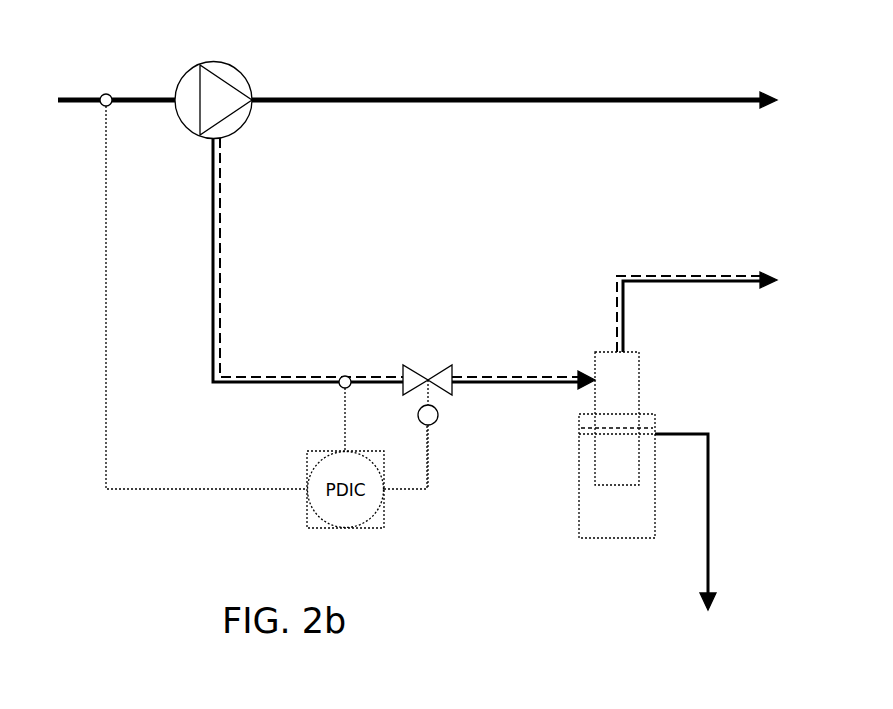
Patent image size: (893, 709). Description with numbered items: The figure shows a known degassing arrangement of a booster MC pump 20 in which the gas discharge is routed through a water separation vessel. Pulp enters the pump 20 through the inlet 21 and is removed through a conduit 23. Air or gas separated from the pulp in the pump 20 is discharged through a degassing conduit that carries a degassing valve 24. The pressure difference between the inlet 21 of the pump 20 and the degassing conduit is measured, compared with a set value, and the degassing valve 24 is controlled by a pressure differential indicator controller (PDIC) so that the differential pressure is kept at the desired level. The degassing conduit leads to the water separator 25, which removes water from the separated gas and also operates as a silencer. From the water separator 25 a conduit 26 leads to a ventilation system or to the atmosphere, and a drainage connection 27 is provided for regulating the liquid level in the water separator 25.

The booster MC pump 20 is at (238, 128).
The inlet 21 is at (146, 97).
The conduit 23 is at (403, 97).
The degassing valve 24 is at (417, 370).
The water separator 25 is at (668, 372).
The conduit 26 is at (687, 273).
The drainage connection 27 is at (710, 497).